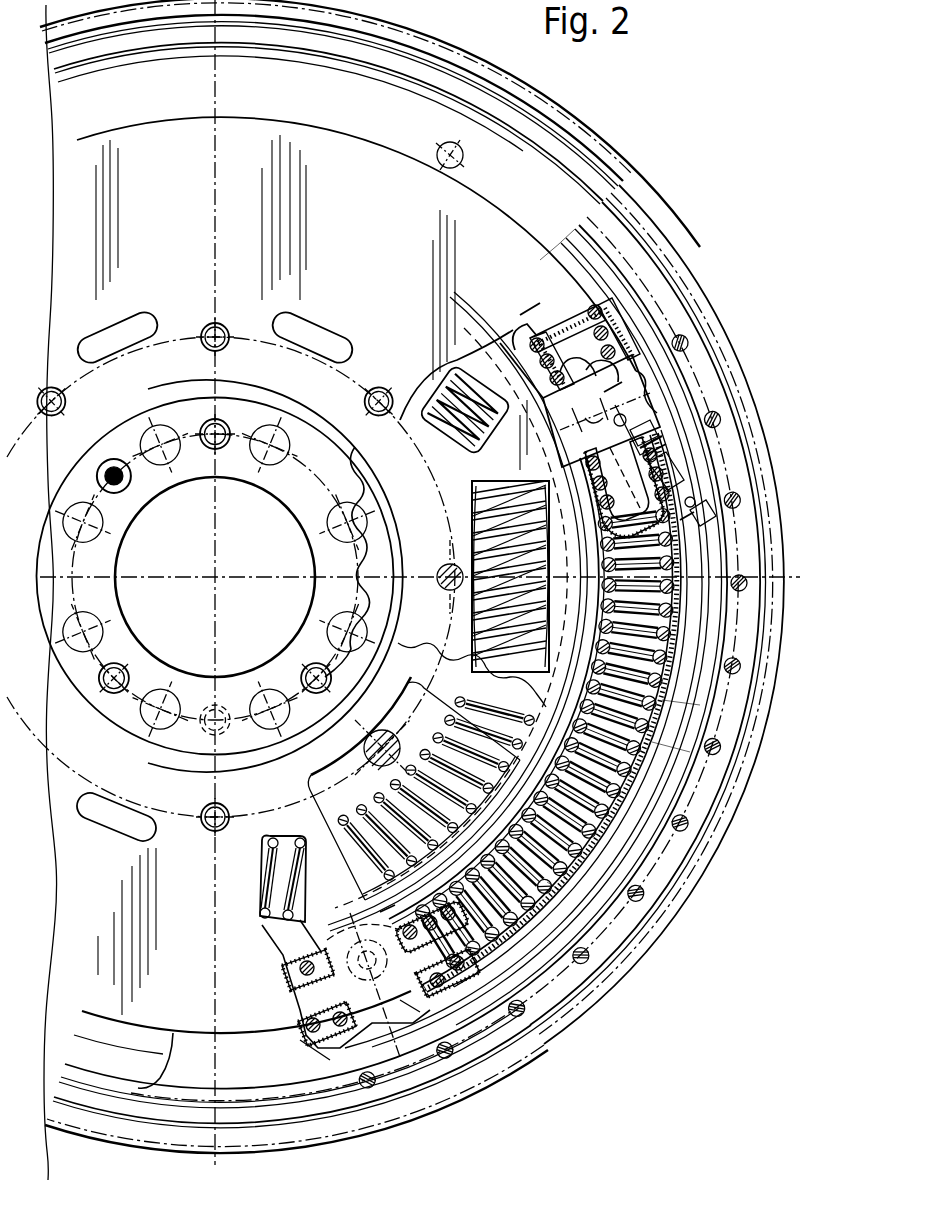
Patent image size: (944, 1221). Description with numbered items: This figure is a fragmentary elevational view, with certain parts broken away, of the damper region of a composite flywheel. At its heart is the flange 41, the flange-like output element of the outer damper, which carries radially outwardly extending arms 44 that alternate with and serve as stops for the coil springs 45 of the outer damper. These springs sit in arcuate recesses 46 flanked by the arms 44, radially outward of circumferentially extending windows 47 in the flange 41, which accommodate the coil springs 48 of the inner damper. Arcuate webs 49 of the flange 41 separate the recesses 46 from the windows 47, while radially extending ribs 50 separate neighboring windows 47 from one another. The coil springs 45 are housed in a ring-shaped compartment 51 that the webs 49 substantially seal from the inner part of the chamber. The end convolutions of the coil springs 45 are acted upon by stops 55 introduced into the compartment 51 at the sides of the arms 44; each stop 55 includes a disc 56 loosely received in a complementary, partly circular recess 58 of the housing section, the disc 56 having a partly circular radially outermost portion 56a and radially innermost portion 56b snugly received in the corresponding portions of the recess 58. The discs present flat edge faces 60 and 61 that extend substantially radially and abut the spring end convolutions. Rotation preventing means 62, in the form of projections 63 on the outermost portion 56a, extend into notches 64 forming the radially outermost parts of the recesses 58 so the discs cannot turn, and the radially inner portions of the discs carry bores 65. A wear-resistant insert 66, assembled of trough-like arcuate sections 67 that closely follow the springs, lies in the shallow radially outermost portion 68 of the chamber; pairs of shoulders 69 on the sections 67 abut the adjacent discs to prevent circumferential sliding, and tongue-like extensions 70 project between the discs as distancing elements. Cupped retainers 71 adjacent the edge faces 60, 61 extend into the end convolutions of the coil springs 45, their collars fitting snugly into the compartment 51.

The flange 41 is at (592, 830).
The arms 44 is at (338, 985).
The coil springs 45 is at (662, 700).
The recesses 46 is at (652, 742).
The windows 47 is at (522, 905).
The coil springs 48 is at (502, 937).
The arcuate webs 49 is at (672, 650).
The ribs 50 is at (492, 448).
The ring-shaped compartment 51 is at (572, 862).
The stops 55 is at (632, 432).
The disc 56 is at (660, 428).
The radially outermost portion 56a is at (668, 492).
The radially innermost portion 56b is at (566, 360).
The recesses 58 is at (664, 470).
The flat edge faces 60 is at (574, 376).
The flat edge faces 61 is at (702, 518).
The rotation preventing means 62 is at (652, 452).
The projections 63 is at (656, 452).
The notches 64 is at (642, 440).
The bores 65 is at (386, 1042).
The insert 66 is at (547, 882).
The arcuate sections 67 is at (596, 372).
The radially outermost portion 68 is at (632, 782).
The shoulders 69 is at (622, 422).
The tongue-like extensions 70 is at (400, 1022).
The cupped retainers 71 is at (532, 405).